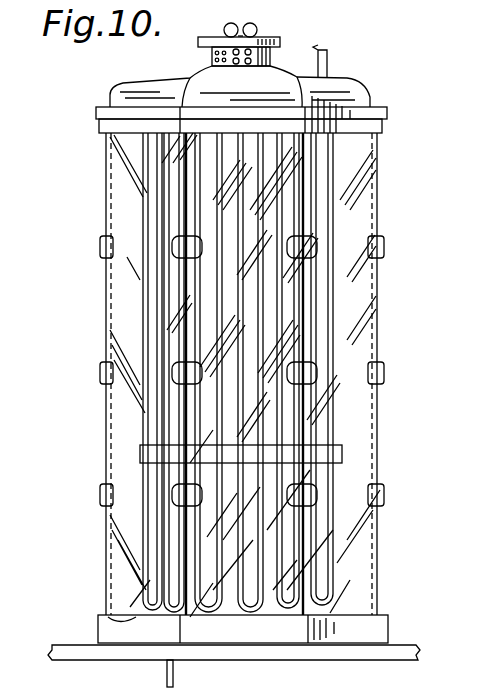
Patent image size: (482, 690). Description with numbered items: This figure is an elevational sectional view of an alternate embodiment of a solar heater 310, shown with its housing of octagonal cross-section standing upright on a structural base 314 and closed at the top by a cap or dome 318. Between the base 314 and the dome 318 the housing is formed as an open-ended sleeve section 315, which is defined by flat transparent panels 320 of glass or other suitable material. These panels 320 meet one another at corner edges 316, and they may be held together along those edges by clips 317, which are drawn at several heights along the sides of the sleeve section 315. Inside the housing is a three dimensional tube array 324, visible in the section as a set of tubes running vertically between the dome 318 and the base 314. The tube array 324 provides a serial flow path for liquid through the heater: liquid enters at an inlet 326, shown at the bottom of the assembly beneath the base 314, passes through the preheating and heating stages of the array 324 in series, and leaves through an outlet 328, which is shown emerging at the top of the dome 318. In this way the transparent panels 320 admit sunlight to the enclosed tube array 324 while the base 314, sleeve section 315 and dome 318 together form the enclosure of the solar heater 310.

The solar heater 310 is at (388, 228).
The structural base 314 is at (112, 630).
The open-ended sleeve section 315 is at (112, 415).
The corner edges 316 is at (303, 172).
The clips 317 is at (100, 250).
The cap or dome 318 is at (158, 81).
The flat transparent panels 320 is at (370, 417).
The three dimensional tube array 324 is at (143, 205).
The inlet 326 is at (176, 672).
The outlet 328 is at (318, 54).